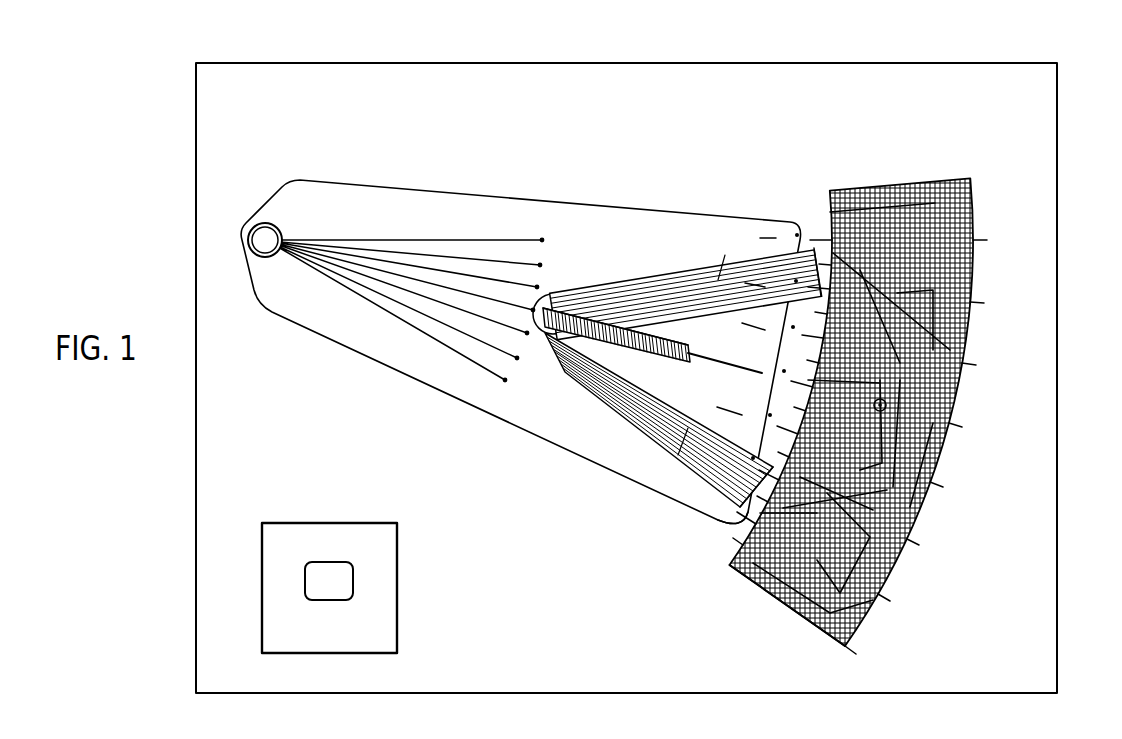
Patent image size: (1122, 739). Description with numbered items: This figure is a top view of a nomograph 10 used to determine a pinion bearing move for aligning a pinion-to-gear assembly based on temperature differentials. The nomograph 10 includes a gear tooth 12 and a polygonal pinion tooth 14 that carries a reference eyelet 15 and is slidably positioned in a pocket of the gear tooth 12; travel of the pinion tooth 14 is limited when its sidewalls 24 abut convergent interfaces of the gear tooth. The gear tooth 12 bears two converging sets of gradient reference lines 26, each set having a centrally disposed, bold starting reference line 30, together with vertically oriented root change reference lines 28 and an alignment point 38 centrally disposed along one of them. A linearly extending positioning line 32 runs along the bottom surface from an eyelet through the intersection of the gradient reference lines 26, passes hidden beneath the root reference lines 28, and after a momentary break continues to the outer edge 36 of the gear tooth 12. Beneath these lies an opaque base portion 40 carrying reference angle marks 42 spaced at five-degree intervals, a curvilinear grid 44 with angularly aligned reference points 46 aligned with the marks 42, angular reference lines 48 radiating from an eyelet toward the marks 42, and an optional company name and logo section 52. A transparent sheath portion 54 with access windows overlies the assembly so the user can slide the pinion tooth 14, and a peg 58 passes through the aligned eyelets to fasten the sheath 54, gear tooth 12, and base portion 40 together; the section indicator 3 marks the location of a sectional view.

The nomograph 10 is at (1052, 48).
The gear tooth 12 is at (540, 197).
The pinion tooth 14 is at (811, 250).
The reference eyelet 15 is at (890, 405).
The pinion tooth sidewalls 24 is at (743, 520).
The gradient reference lines 26 is at (700, 260).
The root change reference lines 28 is at (552, 302).
The starting reference line 30 is at (672, 297).
The positioning line 32 is at (710, 355).
The outer edge 36 is at (943, 423).
The alignment point 38 is at (600, 358).
The opaque base portion 40 is at (521, 700).
The reference angle marks 42 is at (818, 250).
The curvilinear grid 44 is at (782, 603).
The reference points 46 is at (901, 240).
The angular reference lines 48 is at (383, 232).
The company name and logo section 52 is at (397, 587).
The transparent sheath portion 54 is at (625, 58).
The peg 58 is at (262, 226).
The section line 3 is at (727, 252).